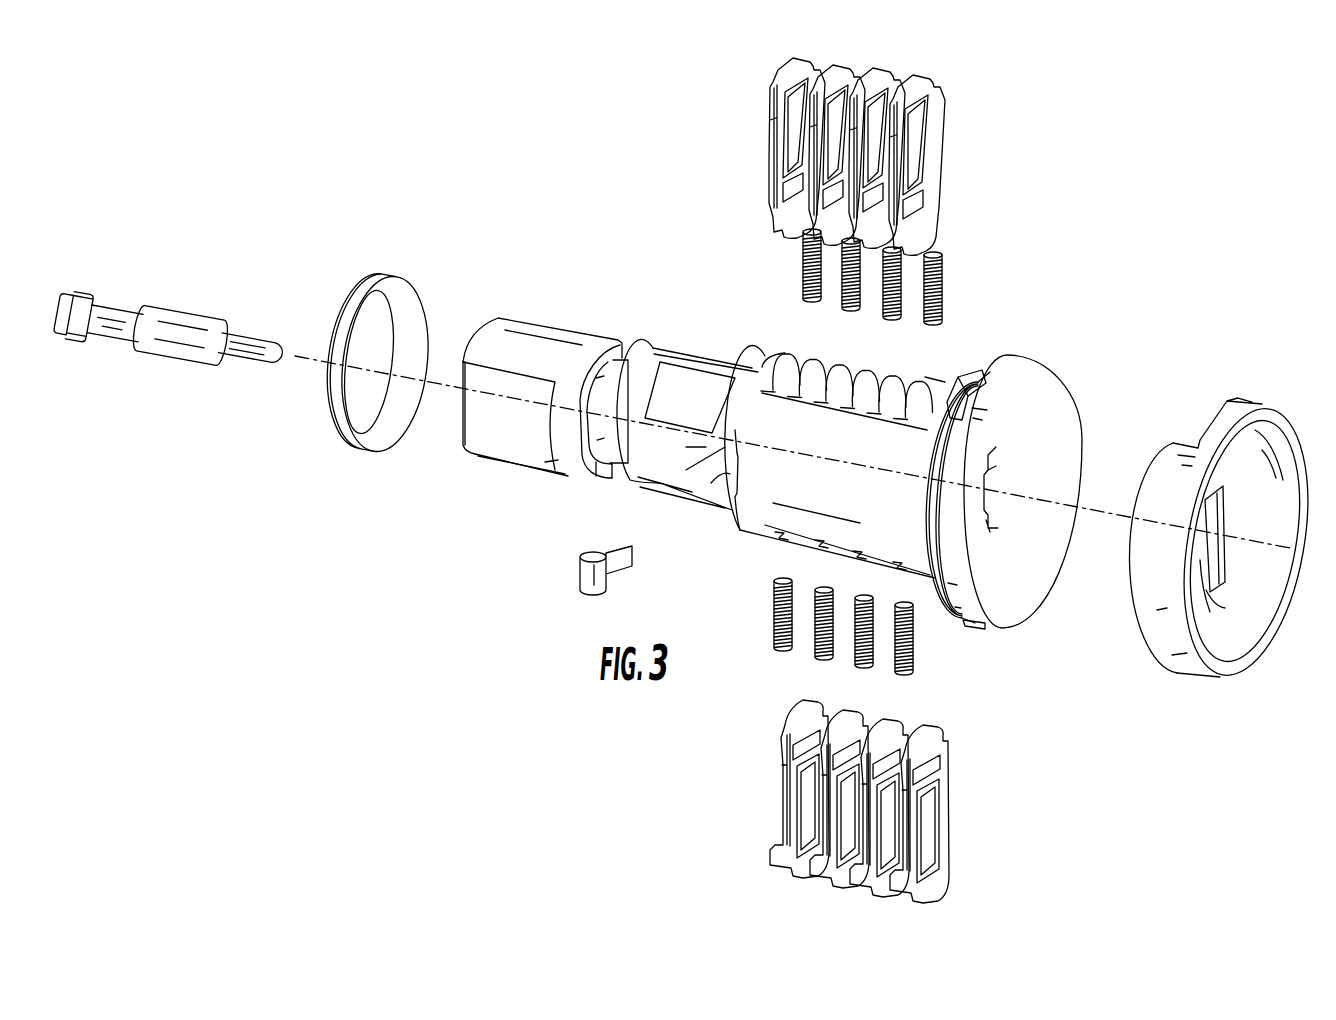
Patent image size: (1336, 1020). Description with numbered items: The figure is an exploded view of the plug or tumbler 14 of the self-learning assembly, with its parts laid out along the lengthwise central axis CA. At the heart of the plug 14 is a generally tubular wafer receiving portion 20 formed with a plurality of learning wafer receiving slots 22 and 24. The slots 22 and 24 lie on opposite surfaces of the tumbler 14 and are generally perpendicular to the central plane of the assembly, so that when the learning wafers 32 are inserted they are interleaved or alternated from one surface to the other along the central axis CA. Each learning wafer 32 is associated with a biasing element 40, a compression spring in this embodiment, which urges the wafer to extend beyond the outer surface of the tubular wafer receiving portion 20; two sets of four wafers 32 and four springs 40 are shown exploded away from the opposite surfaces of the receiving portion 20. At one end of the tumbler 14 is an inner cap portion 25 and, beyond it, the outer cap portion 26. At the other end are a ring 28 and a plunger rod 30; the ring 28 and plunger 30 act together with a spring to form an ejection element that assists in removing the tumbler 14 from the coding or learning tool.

The plug or tumbler 14 is at (1125, 275).
The tubular wafer receiving portion 20 is at (730, 533).
The learning wafer receiving slot 22 is at (910, 388).
The learning wafer receiving slot 24 is at (776, 540).
The inner cap portion 25 is at (1054, 458).
The outer cap portion 26 is at (1274, 521).
The ring 28 is at (363, 293).
The plunger rod 30 is at (169, 333).
The learning wafer 32 is at (958, 173).
The biasing element 40 is at (960, 285).
The central axis CA is at (1101, 490).